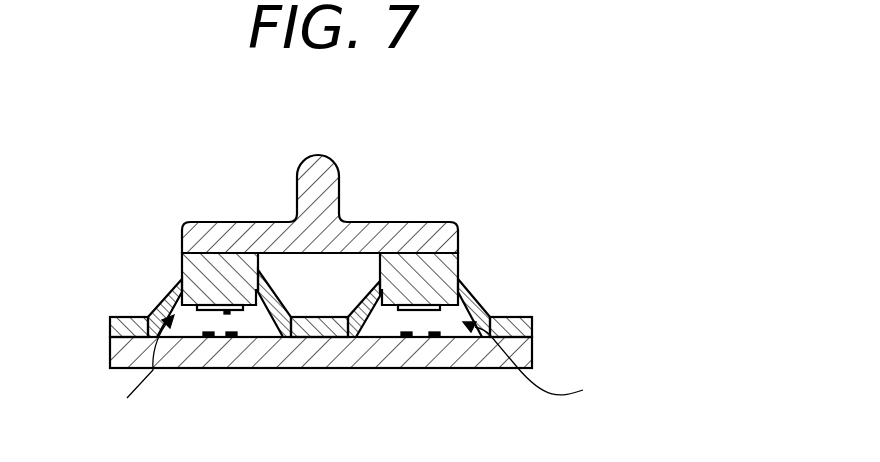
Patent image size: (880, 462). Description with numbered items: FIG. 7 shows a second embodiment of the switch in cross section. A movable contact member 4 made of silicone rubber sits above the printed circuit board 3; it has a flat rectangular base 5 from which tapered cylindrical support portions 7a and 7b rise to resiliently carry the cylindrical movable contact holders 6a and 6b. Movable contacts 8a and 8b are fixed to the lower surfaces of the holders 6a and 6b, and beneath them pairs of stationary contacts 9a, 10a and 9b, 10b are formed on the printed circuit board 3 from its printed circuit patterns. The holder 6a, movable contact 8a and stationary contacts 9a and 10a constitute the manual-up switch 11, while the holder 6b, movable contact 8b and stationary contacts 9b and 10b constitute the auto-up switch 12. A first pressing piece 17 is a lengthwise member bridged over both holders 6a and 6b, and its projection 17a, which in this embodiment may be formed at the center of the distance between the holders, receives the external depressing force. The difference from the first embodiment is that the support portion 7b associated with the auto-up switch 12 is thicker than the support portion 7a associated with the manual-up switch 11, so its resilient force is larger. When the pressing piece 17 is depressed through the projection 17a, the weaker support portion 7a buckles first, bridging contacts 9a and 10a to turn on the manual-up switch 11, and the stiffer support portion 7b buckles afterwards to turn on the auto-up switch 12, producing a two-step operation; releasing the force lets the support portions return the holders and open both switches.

The printed circuit board 3 is at (536, 358).
The movable contact member 4 is at (516, 298).
The base 5 is at (533, 330).
The movable contact holder 6a is at (182, 262).
The movable contact holder 6b is at (458, 262).
The support portion 7a is at (166, 300).
The support portion 7b is at (476, 292).
The movable contact 8a is at (228, 300).
The movable contact 8b is at (363, 299).
The stationary contact 9a is at (213, 337).
The stationary contact 9b is at (412, 337).
The stationary contact 10a is at (228, 337).
The stationary contact 10b is at (430, 337).
The manual-up switch 11 is at (109, 369).
The auto-up switch 12 is at (565, 362).
The first pressing piece 17 is at (395, 222).
The projection 17a is at (336, 156).